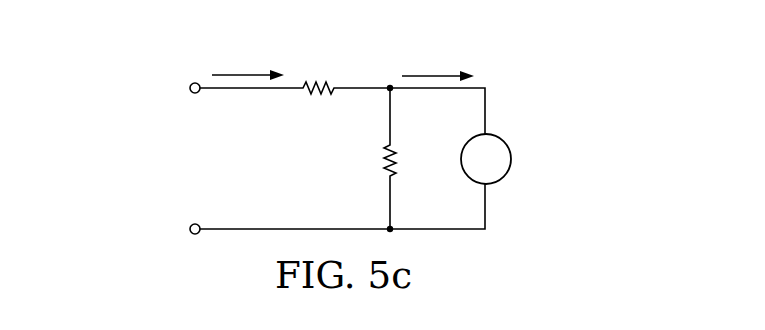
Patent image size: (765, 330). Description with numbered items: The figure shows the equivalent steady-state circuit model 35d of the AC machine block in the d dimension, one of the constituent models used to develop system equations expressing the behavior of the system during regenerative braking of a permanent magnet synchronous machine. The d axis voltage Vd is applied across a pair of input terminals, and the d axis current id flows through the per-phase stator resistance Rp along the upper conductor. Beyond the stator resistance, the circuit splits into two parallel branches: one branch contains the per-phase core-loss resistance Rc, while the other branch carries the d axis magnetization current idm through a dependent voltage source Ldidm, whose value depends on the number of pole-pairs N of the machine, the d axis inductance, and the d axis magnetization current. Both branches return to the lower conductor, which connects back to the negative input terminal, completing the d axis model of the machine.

The d axis equivalent circuit model of AC machine block 35d is at (165, 52).
The d axis voltage Vd is at (189, 157).
The per-phase stator resistance Rp is at (342, 90).
The per-phase core-loss resistance Rc is at (408, 158).
The d axis inductance voltage source term Ldidm is at (542, 159).
The d axis current id is at (248, 58).
The d axis magnetization current idm is at (438, 58).